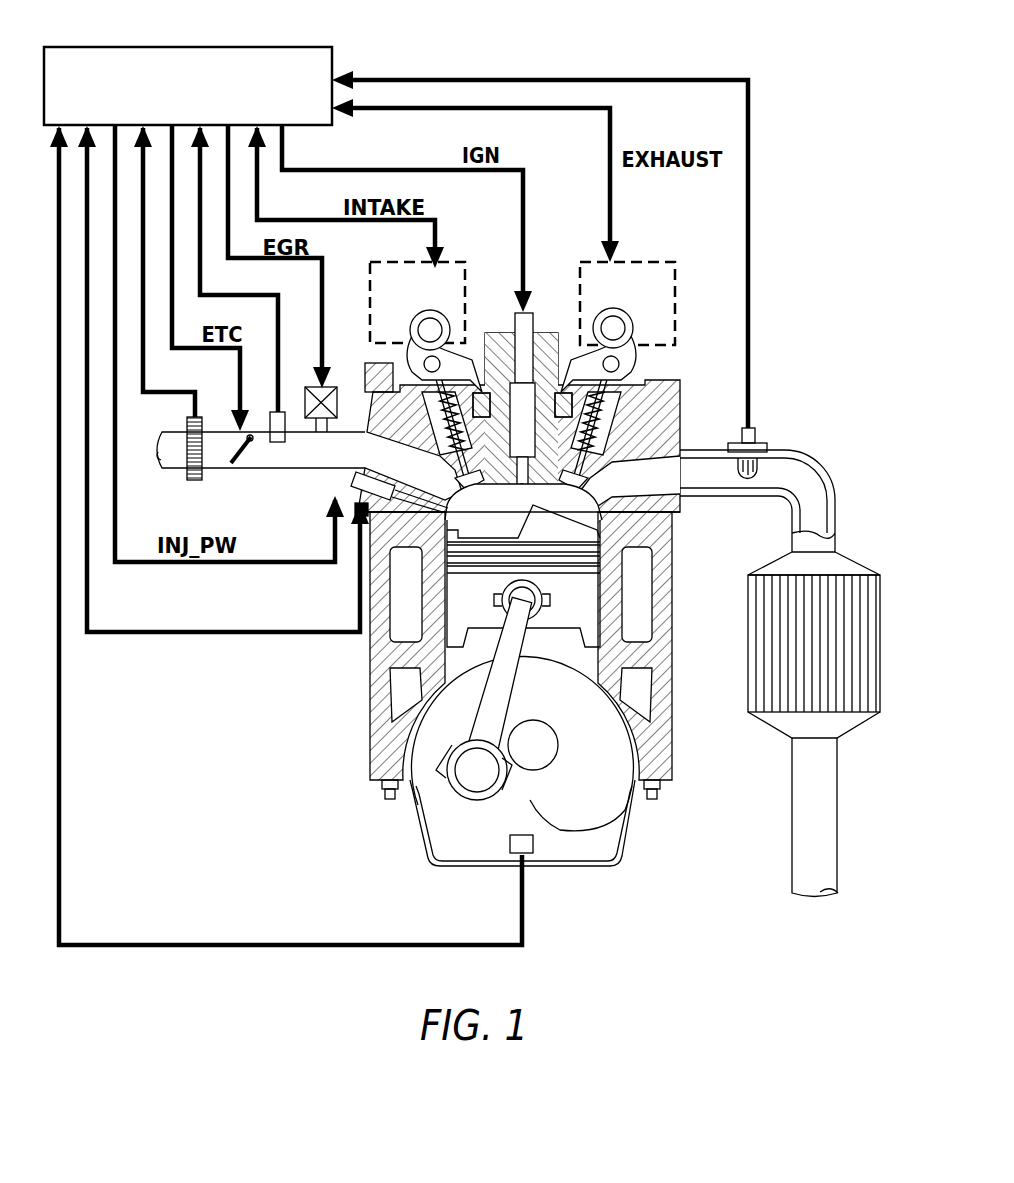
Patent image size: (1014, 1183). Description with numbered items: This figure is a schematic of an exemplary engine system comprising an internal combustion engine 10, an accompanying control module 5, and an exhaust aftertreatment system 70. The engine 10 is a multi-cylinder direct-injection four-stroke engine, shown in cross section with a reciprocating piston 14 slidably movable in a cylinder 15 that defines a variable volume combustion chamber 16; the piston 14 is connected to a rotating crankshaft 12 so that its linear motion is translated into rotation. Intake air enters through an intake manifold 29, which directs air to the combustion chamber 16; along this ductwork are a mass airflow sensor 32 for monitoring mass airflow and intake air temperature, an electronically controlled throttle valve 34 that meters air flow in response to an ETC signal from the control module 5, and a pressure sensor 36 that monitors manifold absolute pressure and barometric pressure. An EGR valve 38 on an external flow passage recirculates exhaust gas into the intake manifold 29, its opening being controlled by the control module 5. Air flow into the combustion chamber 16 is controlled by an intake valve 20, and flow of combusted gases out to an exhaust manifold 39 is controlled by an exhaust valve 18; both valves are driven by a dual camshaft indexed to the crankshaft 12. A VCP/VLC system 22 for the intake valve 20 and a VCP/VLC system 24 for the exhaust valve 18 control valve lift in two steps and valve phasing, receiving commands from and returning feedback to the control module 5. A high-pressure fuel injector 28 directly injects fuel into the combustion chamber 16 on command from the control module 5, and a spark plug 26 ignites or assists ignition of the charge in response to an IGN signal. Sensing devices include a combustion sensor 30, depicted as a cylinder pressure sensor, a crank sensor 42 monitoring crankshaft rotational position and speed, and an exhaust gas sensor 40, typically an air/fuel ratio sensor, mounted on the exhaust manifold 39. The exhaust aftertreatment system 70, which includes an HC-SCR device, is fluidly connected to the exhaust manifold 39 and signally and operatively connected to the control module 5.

The control module 5 is at (340, 50).
The internal combustion engine 10 is at (672, 651).
The crankshaft 12 is at (575, 800).
The piston 14 is at (555, 614).
The cylinder 15 is at (565, 518).
The combustion chamber 16 is at (473, 527).
The exhaust valve 18 is at (590, 487).
The intake valve 20 is at (440, 470).
The VCP/VLC system for the intake valves 22 is at (456, 266).
The VCP/VLC system for the exhaust valves 24 is at (663, 320).
The spark plug 26 is at (527, 317).
The fuel injector 28 is at (335, 488).
The intake manifold 29 is at (350, 432).
The combustion sensor 30 is at (358, 518).
The mass airflow sensor 32 is at (190, 480).
The throttle valve 34 is at (238, 465).
The pressure sensor 36 is at (275, 443).
The EGR valve 38 is at (318, 420).
The exhaust manifold 39 is at (665, 470).
The exhaust gas sensor 40 is at (760, 440).
The crank sensor 42 is at (512, 848).
The exhaust aftertreatment system 70 is at (845, 570).